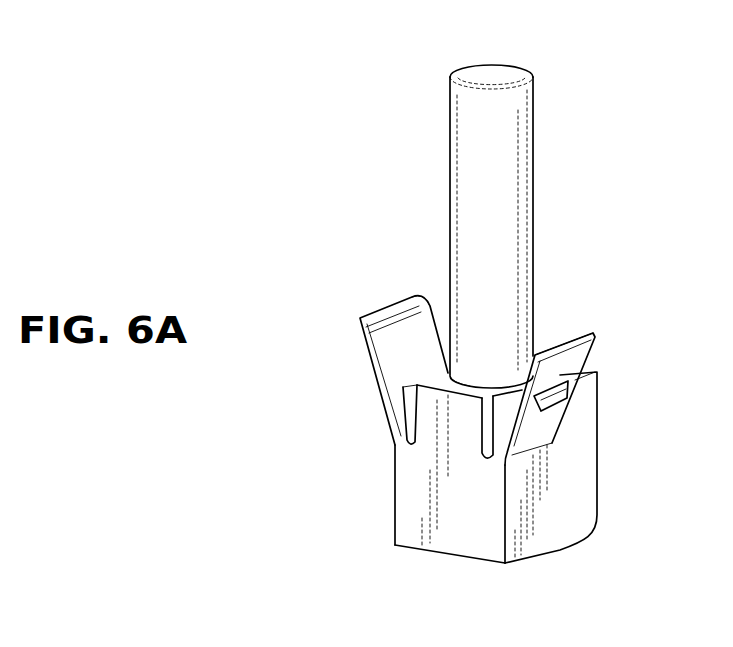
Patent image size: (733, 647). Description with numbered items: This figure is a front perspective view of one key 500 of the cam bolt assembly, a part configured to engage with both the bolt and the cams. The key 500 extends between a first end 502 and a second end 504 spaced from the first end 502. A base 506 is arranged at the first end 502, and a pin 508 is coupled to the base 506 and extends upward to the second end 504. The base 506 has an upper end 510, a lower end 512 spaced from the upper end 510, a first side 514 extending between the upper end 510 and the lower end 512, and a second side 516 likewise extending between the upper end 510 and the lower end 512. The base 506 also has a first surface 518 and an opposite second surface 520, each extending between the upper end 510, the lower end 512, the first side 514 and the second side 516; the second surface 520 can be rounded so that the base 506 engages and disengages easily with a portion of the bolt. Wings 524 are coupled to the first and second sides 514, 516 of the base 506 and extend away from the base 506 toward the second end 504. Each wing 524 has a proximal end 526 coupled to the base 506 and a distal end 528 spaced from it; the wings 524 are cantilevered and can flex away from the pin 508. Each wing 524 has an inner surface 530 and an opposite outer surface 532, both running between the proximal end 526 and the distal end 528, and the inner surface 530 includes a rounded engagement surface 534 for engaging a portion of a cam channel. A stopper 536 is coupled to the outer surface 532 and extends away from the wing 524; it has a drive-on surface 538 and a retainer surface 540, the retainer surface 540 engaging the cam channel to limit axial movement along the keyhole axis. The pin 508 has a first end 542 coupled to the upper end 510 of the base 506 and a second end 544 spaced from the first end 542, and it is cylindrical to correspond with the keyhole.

The key 500 is at (316, 86).
The first end 502 is at (511, 581).
The second end 504 is at (528, 58).
The base 506 is at (562, 527).
The pin 508 is at (512, 198).
The upper end 510 is at (412, 420).
The lower end 512 is at (452, 553).
The first side 514 is at (586, 440).
The second side 516 is at (394, 498).
The first surface 518 is at (418, 520).
The second surface 520 is at (575, 400).
The wing 524 is at (378, 376).
The proximal end 526 is at (396, 442).
The distal end 528 is at (362, 326).
The inner surface 530 is at (360, 316).
The outer surface 532 is at (368, 350).
The rounded engagement surface 534 is at (392, 336).
The stopper 536 is at (567, 387).
The drive-on surface 538 is at (562, 366).
The retainer surface 540 is at (548, 414).
The first end of pin 542 is at (462, 365).
The second end of pin 544 is at (465, 114).